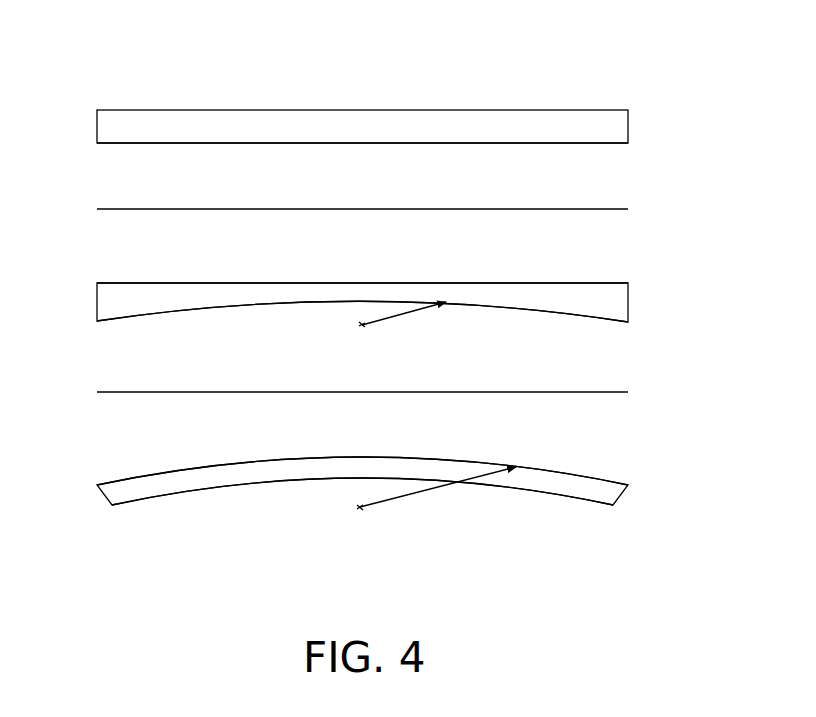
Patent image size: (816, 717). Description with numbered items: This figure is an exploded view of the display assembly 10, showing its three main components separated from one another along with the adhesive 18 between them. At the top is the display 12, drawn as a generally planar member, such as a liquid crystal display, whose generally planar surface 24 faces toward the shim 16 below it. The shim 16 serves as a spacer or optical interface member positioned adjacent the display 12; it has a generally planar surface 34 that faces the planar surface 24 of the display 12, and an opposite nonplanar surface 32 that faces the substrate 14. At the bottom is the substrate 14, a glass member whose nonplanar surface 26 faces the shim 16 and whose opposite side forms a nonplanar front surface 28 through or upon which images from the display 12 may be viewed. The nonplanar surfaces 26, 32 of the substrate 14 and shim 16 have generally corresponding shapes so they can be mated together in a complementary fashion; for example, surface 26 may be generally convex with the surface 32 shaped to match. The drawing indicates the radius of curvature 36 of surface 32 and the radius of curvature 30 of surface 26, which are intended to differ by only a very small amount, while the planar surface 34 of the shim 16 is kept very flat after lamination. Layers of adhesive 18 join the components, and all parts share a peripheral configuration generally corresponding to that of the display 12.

The display assembly 10 is at (221, 73).
The display 12 is at (597, 110).
The substrate 14 is at (597, 479).
The shim 16 is at (597, 283).
The adhesive 18 is at (597, 209).
The planar surface 24 is at (131, 146).
The nonplanar surface 26 is at (129, 477).
The front surface 28 is at (129, 505).
The radius of curvature 30 is at (394, 497).
The nonplanar surface 32 is at (131, 323).
The planar surface 34 is at (131, 281).
The radius of curvature 36 is at (396, 318).